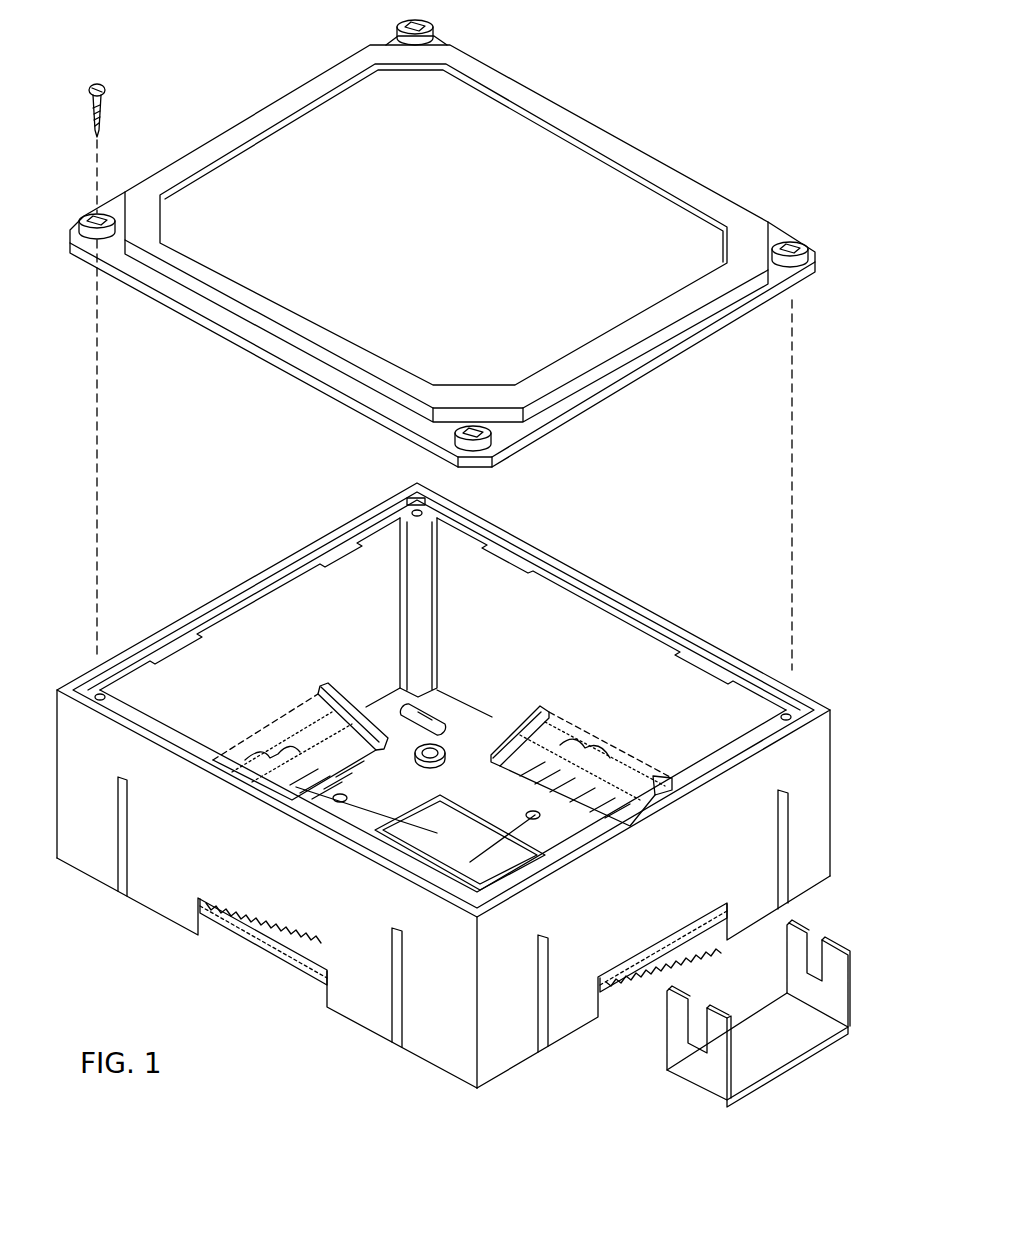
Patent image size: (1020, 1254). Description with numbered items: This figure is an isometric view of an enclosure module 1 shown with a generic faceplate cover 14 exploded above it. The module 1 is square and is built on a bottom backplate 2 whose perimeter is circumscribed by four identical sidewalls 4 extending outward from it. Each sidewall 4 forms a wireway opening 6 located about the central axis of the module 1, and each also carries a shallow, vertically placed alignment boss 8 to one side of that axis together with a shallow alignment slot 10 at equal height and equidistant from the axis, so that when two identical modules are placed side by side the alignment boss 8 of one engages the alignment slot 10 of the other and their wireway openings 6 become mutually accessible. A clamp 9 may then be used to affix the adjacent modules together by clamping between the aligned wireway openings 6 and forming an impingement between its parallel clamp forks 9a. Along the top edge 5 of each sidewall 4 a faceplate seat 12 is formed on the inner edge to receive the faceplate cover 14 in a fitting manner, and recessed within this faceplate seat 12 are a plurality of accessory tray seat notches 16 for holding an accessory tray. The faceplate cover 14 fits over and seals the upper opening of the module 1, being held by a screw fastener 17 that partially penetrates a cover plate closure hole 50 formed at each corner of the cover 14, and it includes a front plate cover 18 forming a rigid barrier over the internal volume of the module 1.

The enclosure module 1 is at (696, 466).
The bottom backplate 2 is at (464, 785).
The sidewall 4 is at (175, 880).
The top edge 5 is at (243, 588).
The wireway opening 6 is at (278, 970).
The alignment boss 8 is at (118, 895).
The clamp 9 is at (780, 1001).
The clamp fork 9a is at (838, 958).
The alignment slot 10 is at (790, 835).
The faceplate seat 12 is at (588, 592).
The faceplate cover 14 is at (421, 345).
The accessory tray seat notch 16 is at (705, 665).
The screw fastener 17 is at (105, 105).
The front plate cover 18 is at (510, 137).
The cover plate closure hole 50 is at (88, 214).